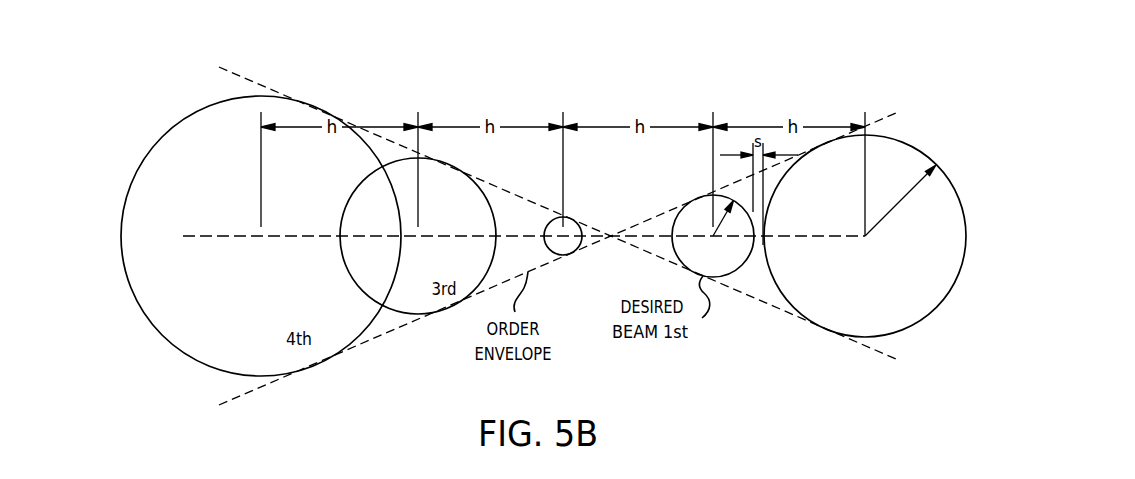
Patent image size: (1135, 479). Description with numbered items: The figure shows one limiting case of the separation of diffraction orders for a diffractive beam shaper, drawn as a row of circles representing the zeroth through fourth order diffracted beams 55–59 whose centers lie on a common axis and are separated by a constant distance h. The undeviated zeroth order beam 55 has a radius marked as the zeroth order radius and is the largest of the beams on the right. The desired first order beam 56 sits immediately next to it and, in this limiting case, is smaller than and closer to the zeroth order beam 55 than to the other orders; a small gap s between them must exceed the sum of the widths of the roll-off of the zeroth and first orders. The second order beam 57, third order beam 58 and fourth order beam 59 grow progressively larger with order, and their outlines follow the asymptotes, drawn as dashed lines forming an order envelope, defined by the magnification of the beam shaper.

The 0th order diffracted beam 55 is at (910, 150).
The 1st order diffracted beam 56 is at (697, 198).
The 2nd order diffracted beam 57 is at (548, 224).
The 3rd order diffracted beam 58 is at (395, 160).
The 4th order diffracted beam 59 is at (272, 96).